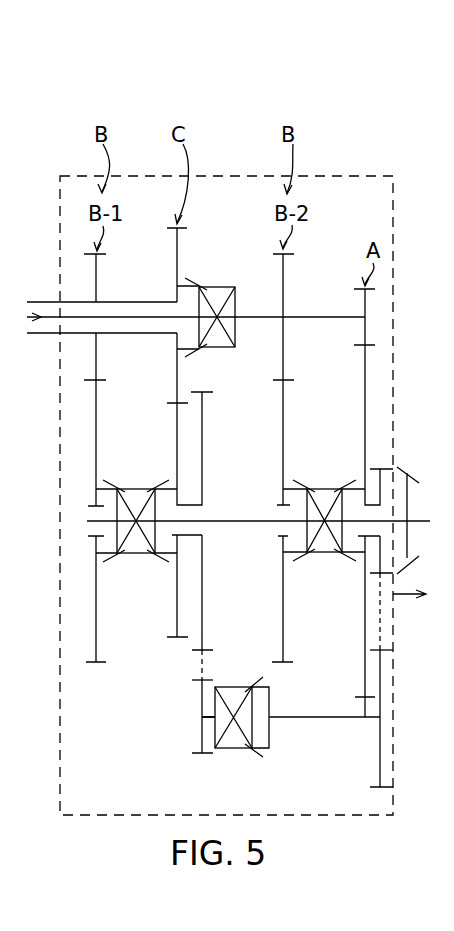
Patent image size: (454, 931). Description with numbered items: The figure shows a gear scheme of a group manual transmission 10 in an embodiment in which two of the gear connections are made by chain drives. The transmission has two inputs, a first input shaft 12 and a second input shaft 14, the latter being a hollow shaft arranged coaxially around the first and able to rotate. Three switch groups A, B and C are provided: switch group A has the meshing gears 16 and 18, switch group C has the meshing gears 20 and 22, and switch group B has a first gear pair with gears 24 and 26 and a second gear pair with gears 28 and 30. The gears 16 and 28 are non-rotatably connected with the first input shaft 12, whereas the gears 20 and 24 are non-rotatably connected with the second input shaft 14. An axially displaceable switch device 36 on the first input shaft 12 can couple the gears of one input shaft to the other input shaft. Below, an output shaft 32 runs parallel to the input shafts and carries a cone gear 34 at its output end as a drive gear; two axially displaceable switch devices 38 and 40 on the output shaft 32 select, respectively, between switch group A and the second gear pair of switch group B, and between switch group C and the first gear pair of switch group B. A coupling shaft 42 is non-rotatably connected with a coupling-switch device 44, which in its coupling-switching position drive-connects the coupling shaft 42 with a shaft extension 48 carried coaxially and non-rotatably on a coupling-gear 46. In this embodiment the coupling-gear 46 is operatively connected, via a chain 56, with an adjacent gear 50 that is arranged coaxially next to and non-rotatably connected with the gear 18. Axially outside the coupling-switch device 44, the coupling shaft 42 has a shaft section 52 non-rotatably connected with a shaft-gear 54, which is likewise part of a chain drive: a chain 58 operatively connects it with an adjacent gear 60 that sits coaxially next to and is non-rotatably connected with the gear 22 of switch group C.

The group manual transmission 10 is at (238, 103).
The first input shaft 12 is at (47, 320).
The second input shaft 14 is at (43, 300).
The gear 16 is at (367, 305).
The gear 18 is at (367, 365).
The gear 20 is at (178, 249).
The gear 22 is at (175, 435).
The gear 24 is at (97, 275).
The gear 26 is at (97, 412).
The gear 28 is at (284, 282).
The gear 30 is at (285, 402).
The output shaft 32 is at (232, 520).
The cone gear 34 is at (397, 467).
The switch device 36 is at (224, 348).
The switch device 38 is at (320, 488).
The switch device 40 is at (127, 553).
The coupling shaft 42 is at (207, 723).
The coupling-switch device 44 is at (240, 749).
The coupling-gear 46 is at (377, 737).
The shaft extension 48 is at (303, 716).
The adjacent gear 50 is at (373, 560).
The shaft section 52 is at (206, 713).
The shaft-gear 54 is at (201, 698).
The chain 56 is at (378, 618).
The chain 58 is at (200, 667).
The adjacent gear 60 is at (203, 618).